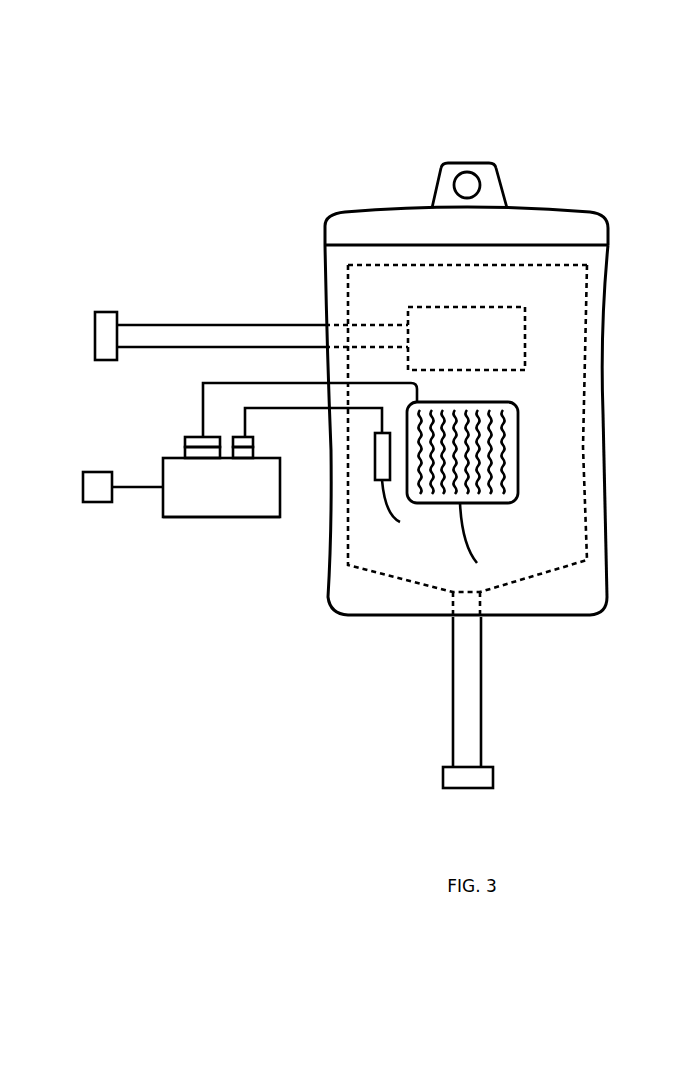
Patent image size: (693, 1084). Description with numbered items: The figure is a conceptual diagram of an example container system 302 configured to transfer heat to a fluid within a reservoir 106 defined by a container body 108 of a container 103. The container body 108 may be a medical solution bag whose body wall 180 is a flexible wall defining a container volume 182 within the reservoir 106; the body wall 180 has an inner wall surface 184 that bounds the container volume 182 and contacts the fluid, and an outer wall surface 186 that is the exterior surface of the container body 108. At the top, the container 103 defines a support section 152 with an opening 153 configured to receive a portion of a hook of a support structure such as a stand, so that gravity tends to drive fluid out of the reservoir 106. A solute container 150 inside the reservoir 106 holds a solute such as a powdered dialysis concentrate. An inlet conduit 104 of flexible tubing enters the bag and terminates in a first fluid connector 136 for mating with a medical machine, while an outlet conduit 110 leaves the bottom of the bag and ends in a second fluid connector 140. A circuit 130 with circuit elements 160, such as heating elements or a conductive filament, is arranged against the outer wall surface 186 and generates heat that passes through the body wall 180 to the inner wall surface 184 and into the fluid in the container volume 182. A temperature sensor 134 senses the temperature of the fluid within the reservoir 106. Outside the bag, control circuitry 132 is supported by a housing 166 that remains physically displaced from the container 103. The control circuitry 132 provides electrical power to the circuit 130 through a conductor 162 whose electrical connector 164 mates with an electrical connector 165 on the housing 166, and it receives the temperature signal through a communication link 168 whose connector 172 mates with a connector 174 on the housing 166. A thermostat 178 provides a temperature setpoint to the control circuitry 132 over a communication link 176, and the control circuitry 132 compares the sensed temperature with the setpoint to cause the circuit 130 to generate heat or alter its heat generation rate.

The container system 302 is at (275, 192).
The container 103 is at (613, 385).
The container body 108 is at (613, 307).
The reservoir 106 is at (397, 547).
The body wall 180 is at (595, 483).
The inner wall surface 184 is at (587, 477).
The outer wall surface 186 is at (605, 477).
The support section 152 is at (492, 197).
The opening 153 is at (467, 182).
The solute container 150 is at (503, 350).
The inlet conduit 104 is at (147, 348).
The first fluid connector 136 is at (105, 325).
The circuit 130 is at (483, 513).
The container volume 182 is at (527, 426).
The circuit elements 160 is at (487, 538).
The temperature sensor 134 is at (407, 482).
The outlet conduit 110 is at (453, 697).
The second fluid connector 140 is at (477, 778).
The conductor 162 is at (203, 405).
The communication link 168 is at (245, 422).
The electrical connector 164 is at (185, 440).
The electrical connector 165 is at (183, 452).
The connector 172 is at (253, 440).
The connector 174 is at (253, 452).
The control circuitry 132 is at (221, 487).
The housing 166 is at (210, 517).
The communication link 176 is at (143, 487).
The thermostat 178 is at (97, 492).